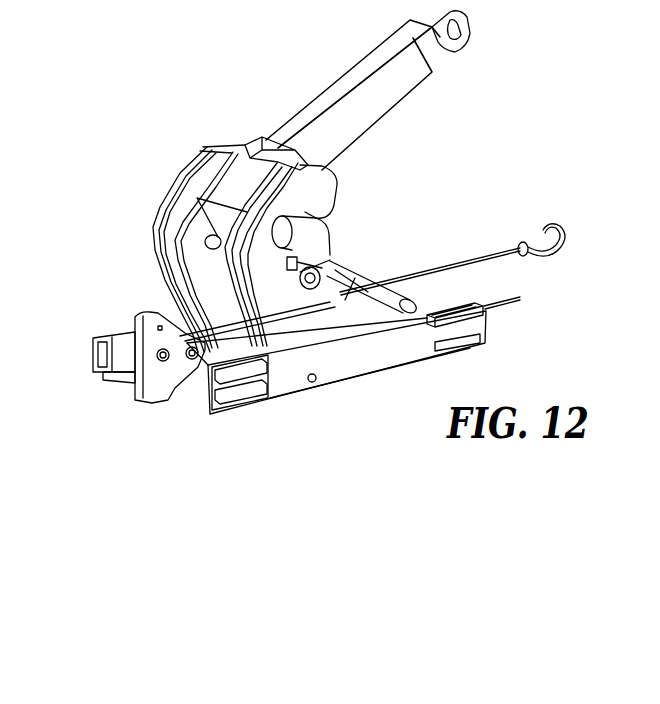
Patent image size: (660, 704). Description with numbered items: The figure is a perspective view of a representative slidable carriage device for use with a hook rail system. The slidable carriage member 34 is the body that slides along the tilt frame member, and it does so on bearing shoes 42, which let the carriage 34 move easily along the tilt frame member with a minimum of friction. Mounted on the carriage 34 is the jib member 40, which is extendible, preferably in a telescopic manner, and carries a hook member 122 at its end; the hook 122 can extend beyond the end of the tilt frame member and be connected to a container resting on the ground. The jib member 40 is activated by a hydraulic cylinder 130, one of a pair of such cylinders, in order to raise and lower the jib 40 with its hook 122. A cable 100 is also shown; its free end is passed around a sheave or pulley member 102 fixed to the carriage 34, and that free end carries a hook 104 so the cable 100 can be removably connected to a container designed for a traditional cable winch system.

The jib member 40 is at (355, 86).
The hook member 122 is at (442, 55).
The hydraulic cylinder 130 is at (360, 295).
The cable 100 is at (460, 262).
The hook 104 is at (567, 230).
The bearing shoes 42 is at (480, 303).
The slidable carriage member 34 is at (400, 343).
The sheave or pulley member 102 is at (125, 370).